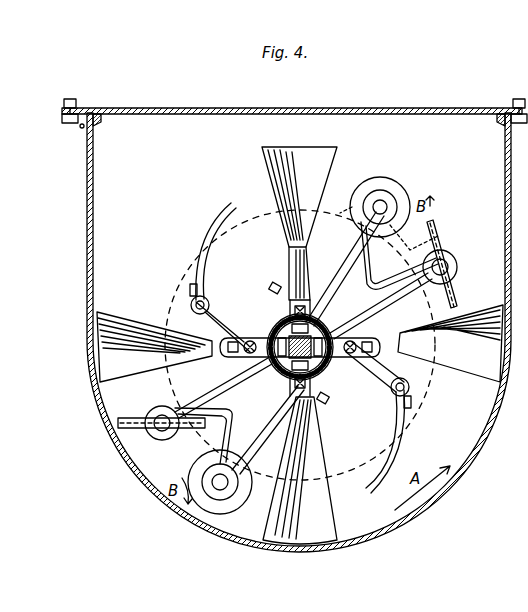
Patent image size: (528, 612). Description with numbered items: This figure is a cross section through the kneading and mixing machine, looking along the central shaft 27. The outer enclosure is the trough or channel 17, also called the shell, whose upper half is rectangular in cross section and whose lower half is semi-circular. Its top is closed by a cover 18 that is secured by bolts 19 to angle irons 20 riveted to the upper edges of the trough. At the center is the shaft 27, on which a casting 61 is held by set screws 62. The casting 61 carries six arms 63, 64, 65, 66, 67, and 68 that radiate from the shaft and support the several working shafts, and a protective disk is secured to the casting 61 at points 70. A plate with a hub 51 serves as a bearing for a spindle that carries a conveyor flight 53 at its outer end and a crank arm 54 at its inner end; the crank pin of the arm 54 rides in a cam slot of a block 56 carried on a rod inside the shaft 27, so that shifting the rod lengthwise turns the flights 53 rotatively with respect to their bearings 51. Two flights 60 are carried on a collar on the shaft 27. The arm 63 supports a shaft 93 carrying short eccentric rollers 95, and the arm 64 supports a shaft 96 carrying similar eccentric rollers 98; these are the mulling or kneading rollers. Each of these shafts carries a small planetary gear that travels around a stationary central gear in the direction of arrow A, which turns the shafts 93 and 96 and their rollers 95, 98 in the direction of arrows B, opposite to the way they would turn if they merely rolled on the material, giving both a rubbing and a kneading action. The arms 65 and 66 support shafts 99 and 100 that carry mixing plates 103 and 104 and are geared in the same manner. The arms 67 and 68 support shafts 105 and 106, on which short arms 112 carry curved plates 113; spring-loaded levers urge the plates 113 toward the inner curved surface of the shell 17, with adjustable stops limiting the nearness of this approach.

The trough or channel 17 is at (88, 324).
The cover 18 is at (194, 108).
The bolts 19 is at (76, 100).
The angle irons 20 is at (92, 124).
The shaft 27 is at (328, 330).
The hub 51 is at (290, 280).
The conveyor flight 53 is at (270, 158).
The crank arm 54 is at (291, 385).
The block 56 is at (288, 340).
The flights 60 is at (112, 318).
The casting 61 is at (300, 367).
The set screws 62 is at (270, 286).
The arm 63 is at (345, 269).
The arm 64 is at (239, 430).
The arm 65 is at (381, 306).
The arm 66 is at (223, 388).
The arm 67 is at (375, 367).
The arm 68 is at (223, 327).
The points 70 is at (306, 300).
The shaft 93 is at (381, 205).
The eccentric rollers 95 is at (410, 222).
The shaft 96 is at (226, 488).
The eccentric rollers 98 is at (206, 508).
The shaft 99 is at (458, 265).
The shaft 100 is at (162, 432).
The mixing plate 103 is at (436, 228).
The mixing plate 104 is at (150, 416).
The shaft 105 is at (412, 389).
The shaft 106 is at (190, 306).
The short arms 112 is at (205, 285).
The curved plates 113 is at (213, 232).